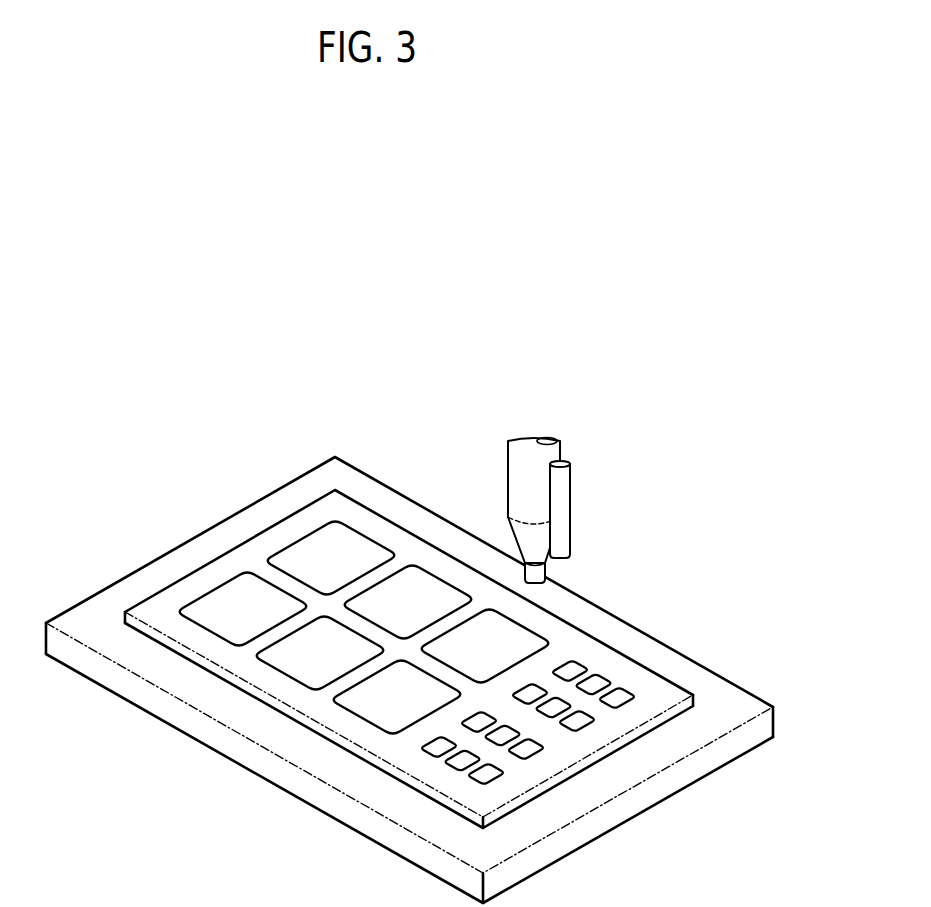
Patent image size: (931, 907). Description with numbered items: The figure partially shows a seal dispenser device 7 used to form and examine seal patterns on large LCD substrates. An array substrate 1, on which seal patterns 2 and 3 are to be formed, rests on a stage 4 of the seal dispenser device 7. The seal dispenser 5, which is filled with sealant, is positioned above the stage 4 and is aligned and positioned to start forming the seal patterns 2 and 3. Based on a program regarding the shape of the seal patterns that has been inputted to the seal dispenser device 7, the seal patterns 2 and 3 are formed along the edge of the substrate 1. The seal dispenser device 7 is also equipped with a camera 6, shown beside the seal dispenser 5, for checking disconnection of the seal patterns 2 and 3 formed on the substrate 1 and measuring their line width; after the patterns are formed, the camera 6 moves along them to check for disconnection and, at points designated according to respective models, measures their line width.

The array substrate 1 is at (610, 755).
The seal pattern 2 is at (287, 688).
The seal pattern 3 is at (428, 755).
The stage 4 is at (563, 850).
The seal dispenser 5 is at (560, 452).
The camera 6 is at (568, 500).
The seal dispenser device 7 is at (212, 496).